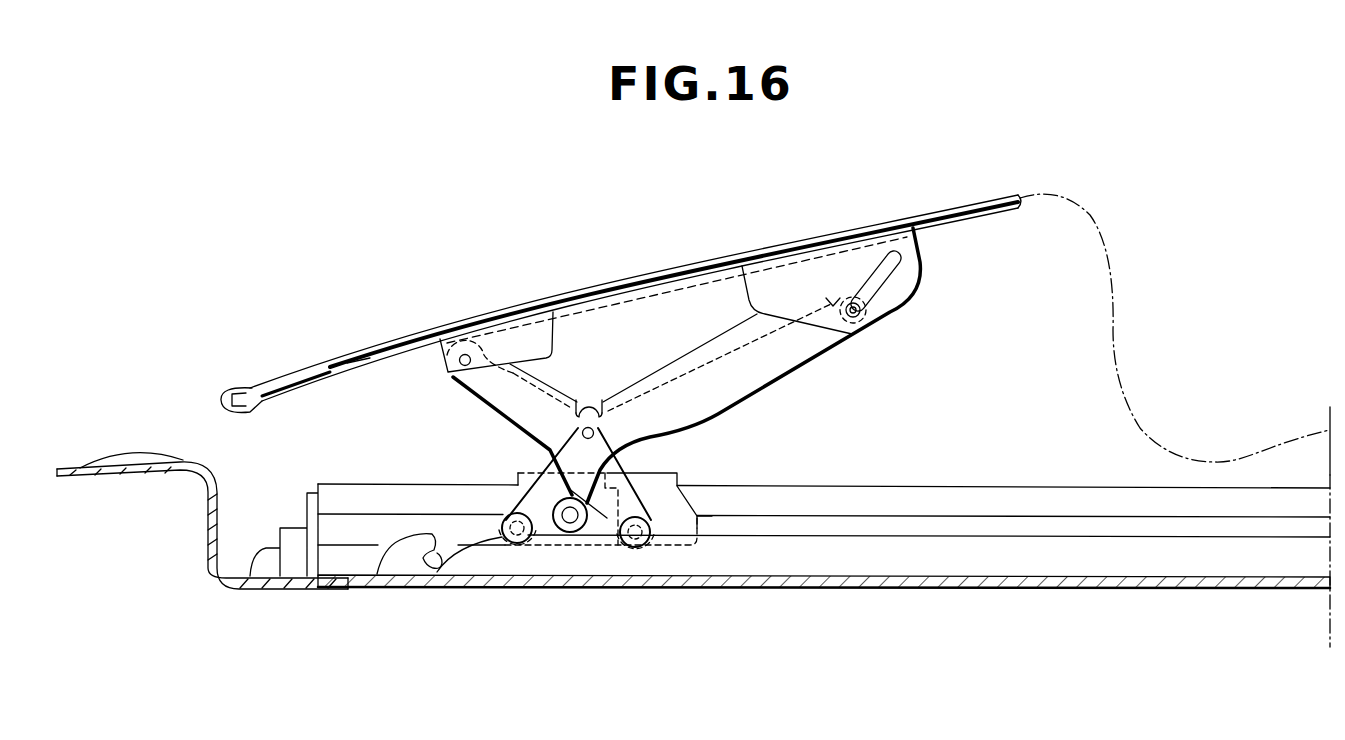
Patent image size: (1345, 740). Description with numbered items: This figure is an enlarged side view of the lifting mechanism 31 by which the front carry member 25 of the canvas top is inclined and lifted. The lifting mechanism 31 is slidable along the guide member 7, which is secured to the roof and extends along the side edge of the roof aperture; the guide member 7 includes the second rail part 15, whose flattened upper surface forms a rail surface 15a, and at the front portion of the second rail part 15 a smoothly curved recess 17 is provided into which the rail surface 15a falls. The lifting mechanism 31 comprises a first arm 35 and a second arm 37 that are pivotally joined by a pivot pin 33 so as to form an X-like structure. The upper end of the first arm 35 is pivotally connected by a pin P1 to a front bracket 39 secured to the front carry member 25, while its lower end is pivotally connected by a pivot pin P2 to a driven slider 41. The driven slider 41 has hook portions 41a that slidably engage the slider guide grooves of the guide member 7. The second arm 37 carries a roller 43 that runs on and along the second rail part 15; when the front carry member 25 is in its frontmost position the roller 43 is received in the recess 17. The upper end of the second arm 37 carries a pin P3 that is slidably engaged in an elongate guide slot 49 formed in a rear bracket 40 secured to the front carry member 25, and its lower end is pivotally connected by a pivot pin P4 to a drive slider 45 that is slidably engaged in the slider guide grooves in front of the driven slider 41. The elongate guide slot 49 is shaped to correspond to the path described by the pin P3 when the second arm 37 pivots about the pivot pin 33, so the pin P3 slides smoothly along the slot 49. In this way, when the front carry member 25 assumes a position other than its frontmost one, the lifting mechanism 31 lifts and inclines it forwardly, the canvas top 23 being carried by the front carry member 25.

The guide member 7 is at (1083, 613).
The second rail part 15 is at (1163, 557).
The rail surface 15a is at (1078, 540).
The recess 17 is at (436, 567).
The lid panel 23 is at (1103, 232).
The front carry member 25 is at (313, 363).
The lifting mechanism 31 is at (742, 413).
The pivot pin 33 is at (590, 428).
The first arm 35 is at (565, 400).
The second arm 37 is at (737, 365).
The front bracket 39 is at (526, 330).
The rear bracket 40 is at (858, 262).
The driven slider 41 is at (670, 517).
The hook portion 41a is at (695, 530).
The roller 43 is at (573, 535).
The drive slider 45 is at (517, 472).
The elongate guide slot 49 is at (900, 270).
The pin P1 is at (463, 352).
The pivot pin P2 is at (645, 548).
The pin P3 is at (870, 316).
The pivot pin P4 is at (516, 545).